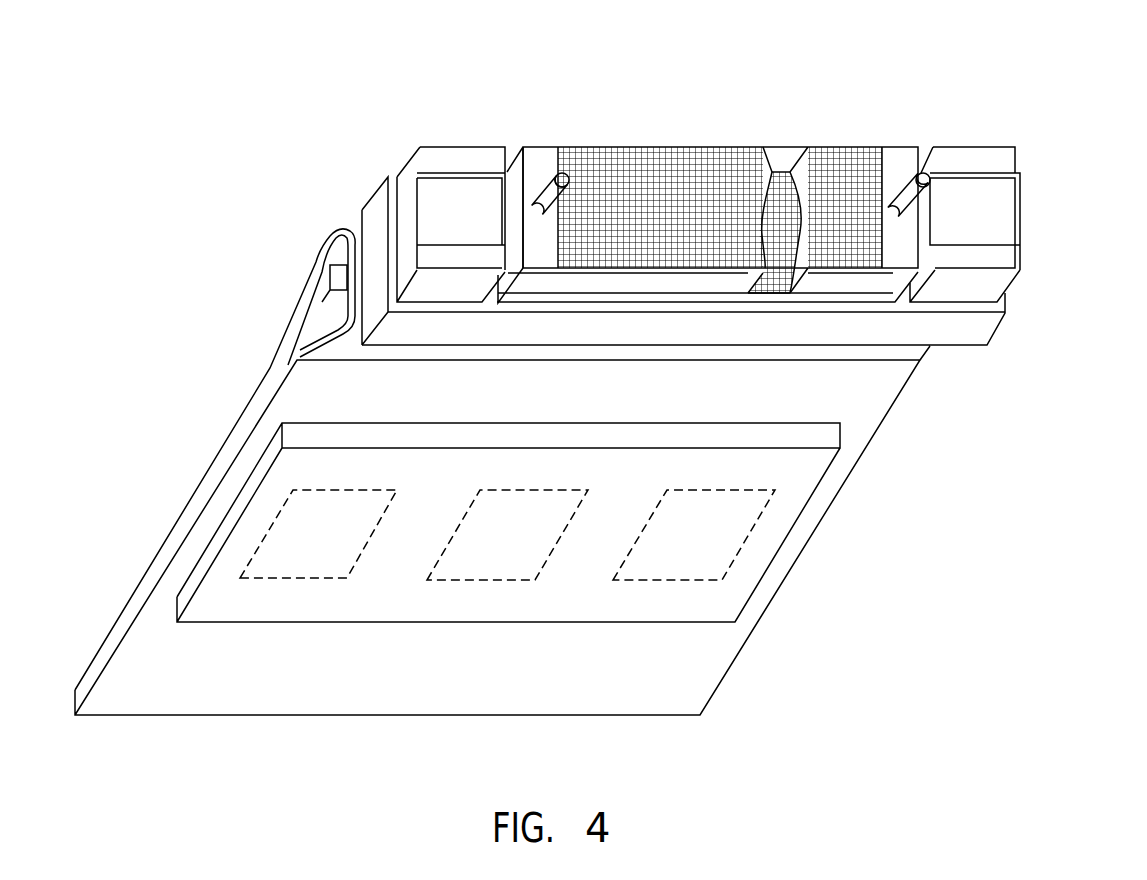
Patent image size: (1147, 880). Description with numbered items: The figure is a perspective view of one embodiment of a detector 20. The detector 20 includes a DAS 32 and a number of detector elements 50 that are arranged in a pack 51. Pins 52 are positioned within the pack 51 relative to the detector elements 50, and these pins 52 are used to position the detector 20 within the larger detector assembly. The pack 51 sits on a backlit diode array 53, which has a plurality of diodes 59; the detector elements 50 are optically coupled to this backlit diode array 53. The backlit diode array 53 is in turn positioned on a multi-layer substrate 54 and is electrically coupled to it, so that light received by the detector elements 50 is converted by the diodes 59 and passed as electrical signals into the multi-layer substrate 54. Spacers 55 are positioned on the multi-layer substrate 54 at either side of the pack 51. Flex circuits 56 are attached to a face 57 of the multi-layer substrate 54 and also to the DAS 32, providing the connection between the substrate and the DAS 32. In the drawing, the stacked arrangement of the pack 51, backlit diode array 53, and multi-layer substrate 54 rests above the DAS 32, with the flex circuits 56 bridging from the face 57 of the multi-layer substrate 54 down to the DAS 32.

The detector 20 is at (940, 105).
The DAS 32 is at (792, 545).
The detector elements 50 is at (640, 147).
The pack 51 is at (558, 111).
The pins 52 is at (543, 190).
The backlit diode array 53 is at (878, 300).
The multi-layer substrate 54 is at (983, 328).
The spacers 55 is at (452, 147).
The flex circuits 56 is at (318, 332).
The face 57 is at (362, 214).
The diodes 59 is at (790, 147).